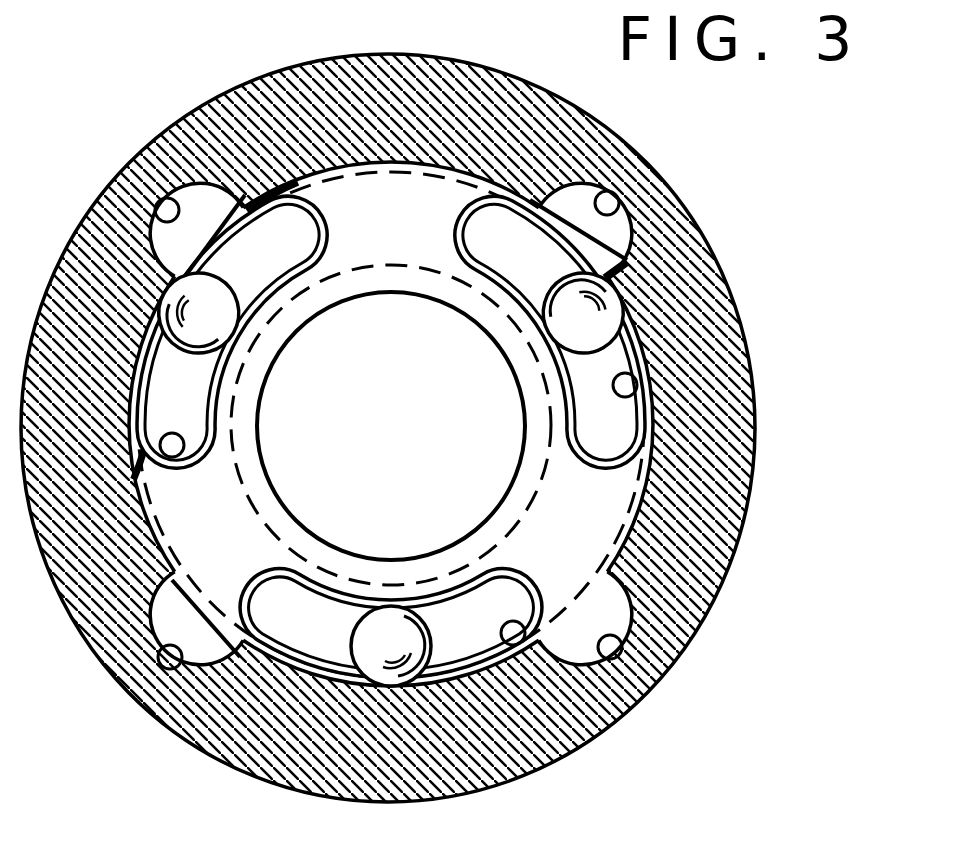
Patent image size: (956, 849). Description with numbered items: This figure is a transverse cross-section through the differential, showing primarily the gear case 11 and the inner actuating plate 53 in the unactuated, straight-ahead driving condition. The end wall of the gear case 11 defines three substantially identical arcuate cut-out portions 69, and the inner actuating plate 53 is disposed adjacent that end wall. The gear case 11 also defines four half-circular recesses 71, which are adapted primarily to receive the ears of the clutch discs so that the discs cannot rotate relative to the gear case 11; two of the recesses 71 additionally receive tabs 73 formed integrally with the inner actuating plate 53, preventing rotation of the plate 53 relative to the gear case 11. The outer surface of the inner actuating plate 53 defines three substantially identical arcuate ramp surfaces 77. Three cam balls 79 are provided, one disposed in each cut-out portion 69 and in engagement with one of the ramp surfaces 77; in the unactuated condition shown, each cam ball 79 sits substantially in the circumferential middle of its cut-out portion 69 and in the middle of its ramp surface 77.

The gear case 11 is at (322, 105).
The inner actuating plate 53 is at (263, 527).
The arcuate cut-out portions 69 is at (318, 226).
The half-circular recesses 71 is at (140, 185).
The tabs 73 is at (563, 225).
The arcuate ramp surfaces 77 is at (640, 392).
The cam balls 79 is at (237, 338).